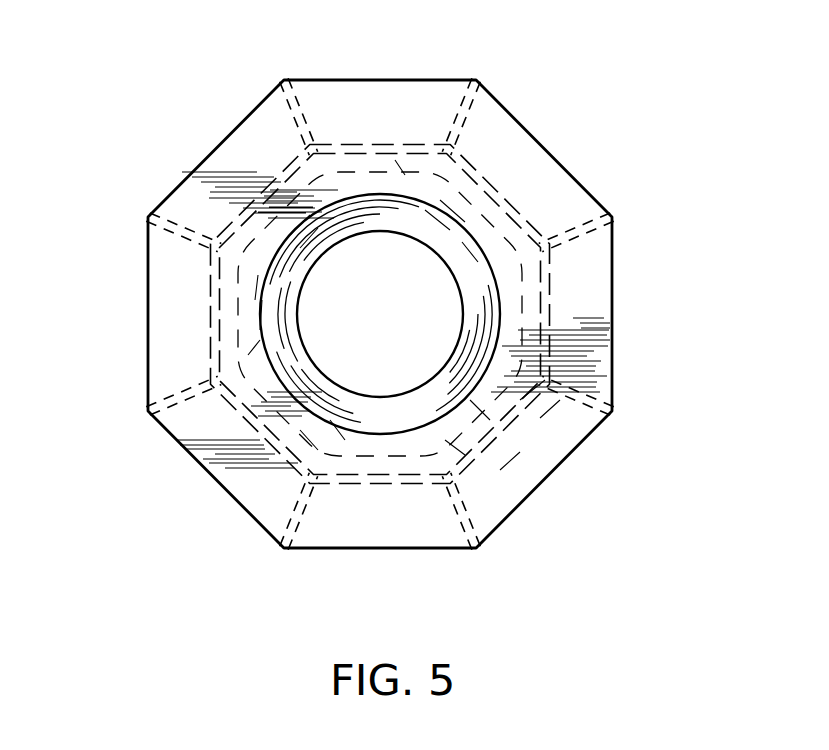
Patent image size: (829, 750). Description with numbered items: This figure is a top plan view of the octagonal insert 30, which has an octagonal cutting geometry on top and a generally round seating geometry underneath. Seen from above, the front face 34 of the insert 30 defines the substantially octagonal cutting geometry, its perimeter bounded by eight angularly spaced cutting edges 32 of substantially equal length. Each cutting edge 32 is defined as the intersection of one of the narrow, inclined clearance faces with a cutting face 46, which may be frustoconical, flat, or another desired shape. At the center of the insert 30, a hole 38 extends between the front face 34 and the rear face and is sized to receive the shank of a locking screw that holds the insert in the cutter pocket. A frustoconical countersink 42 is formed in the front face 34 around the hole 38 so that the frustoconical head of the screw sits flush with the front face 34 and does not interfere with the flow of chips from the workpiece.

The octagonal insert 30 is at (140, 96).
The cutting edges 32 is at (221, 142).
The front face 34 is at (545, 213).
The hole 38 is at (460, 294).
The frustoconical countersink 42 is at (428, 214).
The cutting face 46 is at (180, 194).